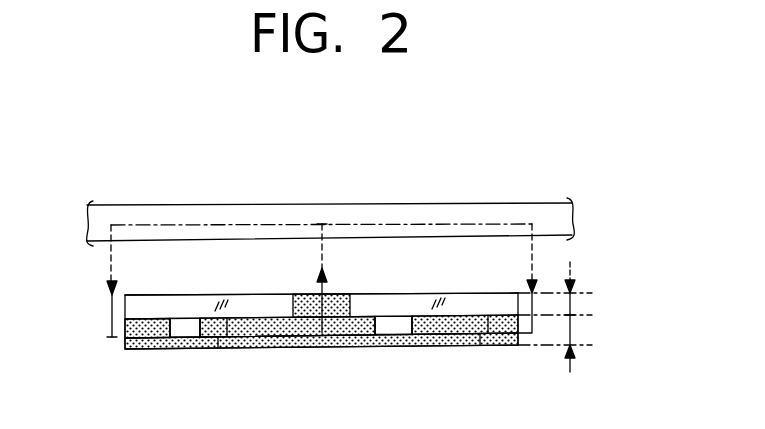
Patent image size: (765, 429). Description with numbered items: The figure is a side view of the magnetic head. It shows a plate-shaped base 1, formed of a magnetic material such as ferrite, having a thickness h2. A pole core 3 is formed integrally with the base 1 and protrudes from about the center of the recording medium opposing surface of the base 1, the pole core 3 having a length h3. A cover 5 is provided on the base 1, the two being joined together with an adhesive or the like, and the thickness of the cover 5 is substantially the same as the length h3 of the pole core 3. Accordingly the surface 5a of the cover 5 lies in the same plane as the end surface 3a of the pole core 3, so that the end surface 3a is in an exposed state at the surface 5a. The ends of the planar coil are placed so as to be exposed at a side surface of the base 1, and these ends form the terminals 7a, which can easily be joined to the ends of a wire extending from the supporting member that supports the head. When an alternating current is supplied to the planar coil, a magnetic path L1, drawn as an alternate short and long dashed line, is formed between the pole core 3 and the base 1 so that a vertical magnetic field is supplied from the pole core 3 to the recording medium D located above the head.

The recording medium D is at (495, 215).
The magnetic path L1 is at (264, 224).
The base 1 is at (290, 329).
The cover 5 is at (140, 310).
The surface of the cover 5a is at (188, 295).
The terminals 7a is at (191, 328).
The end surface of the pole core 3a is at (333, 294).
The pole core 3 is at (350, 306).
The length of the pole core h3 is at (572, 303).
The thickness of the base h2 is at (572, 338).